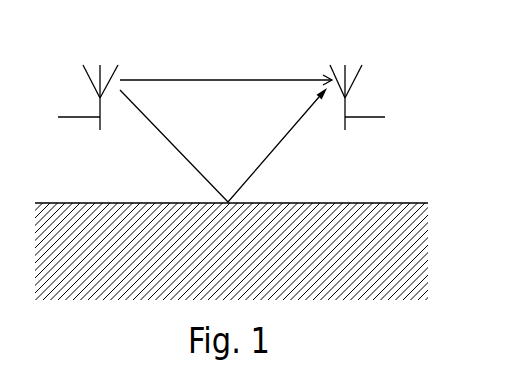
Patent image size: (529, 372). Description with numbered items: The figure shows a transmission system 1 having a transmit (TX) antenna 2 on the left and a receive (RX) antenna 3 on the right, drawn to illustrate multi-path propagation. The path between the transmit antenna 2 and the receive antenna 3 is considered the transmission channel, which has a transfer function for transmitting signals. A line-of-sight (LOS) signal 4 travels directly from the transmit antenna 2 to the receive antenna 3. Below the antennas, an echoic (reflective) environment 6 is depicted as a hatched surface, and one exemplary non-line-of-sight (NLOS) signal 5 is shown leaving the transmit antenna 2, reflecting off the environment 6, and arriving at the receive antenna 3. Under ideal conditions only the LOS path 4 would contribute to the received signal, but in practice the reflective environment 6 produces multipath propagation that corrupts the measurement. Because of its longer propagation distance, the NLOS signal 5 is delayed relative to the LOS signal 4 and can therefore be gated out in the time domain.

The transmission system 1 is at (451, 58).
The transmit (TX) antenna 2 is at (89, 78).
The receive (RX) antenna 3 is at (356, 78).
The line-of-sight (LOS) signal 4 is at (222, 78).
The non-line-of-sight (NLOS) signal 5 is at (257, 168).
The echoic (reflective) environment 6 is at (420, 248).